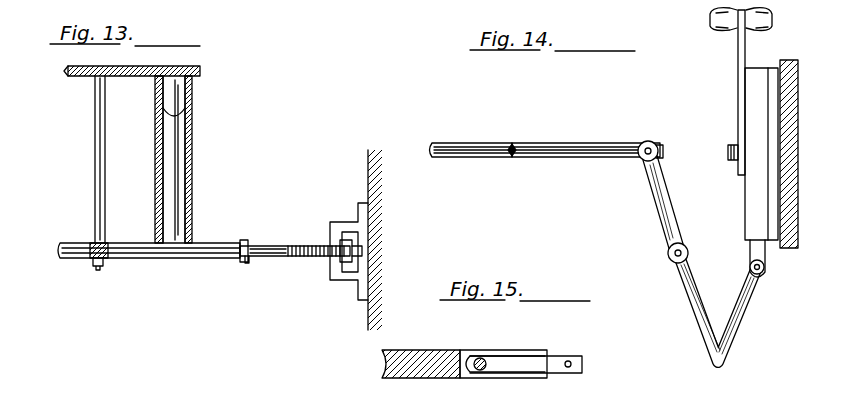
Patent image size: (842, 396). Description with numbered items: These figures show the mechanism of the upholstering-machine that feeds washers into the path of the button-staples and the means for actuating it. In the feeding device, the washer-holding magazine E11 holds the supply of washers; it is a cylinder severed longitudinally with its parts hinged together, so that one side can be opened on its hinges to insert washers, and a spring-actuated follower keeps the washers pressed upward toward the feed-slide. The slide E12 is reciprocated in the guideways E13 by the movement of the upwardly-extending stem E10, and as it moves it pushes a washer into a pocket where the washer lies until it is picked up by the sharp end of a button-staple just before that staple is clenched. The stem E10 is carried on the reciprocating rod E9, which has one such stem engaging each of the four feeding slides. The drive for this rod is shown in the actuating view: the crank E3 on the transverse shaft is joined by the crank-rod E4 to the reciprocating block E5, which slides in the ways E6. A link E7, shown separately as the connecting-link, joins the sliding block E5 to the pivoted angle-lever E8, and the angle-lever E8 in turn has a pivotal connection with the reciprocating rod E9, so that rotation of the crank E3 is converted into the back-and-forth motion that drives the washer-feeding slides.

In FIG. 14, the crank E3 is at (710, 17).
In FIG. 14, the crank-rod E4 is at (738, 74).
In FIG. 13, the reciprocating block E5 is at (360, 222).
In FIG. 14, the reciprocating block E5 is at (745, 192).
In FIG. 15, the reciprocating block E5 is at (456, 340).
In FIG. 13, the ways E6 is at (356, 258).
In FIG. 14, the link E7 is at (750, 248).
In FIG. 15, the link E7 is at (583, 366).
In FIG. 13, the angle-lever E8 is at (285, 257).
In FIG. 14, the angle-lever E8 is at (692, 312).
In FIG. 13, the reciprocating rod E9 is at (160, 258).
In FIG. 14, the reciprocating rod E9 is at (548, 158).
In FIG. 13, the stem E10 is at (102, 158).
In FIG. 14, the stem E10 is at (493, 158).
In FIG. 13, the washer-holding magazine E11 is at (176, 103).
In FIG. 13, the slide E12 is at (150, 70).
In FIG. 13, the guideways E13 is at (66, 71).